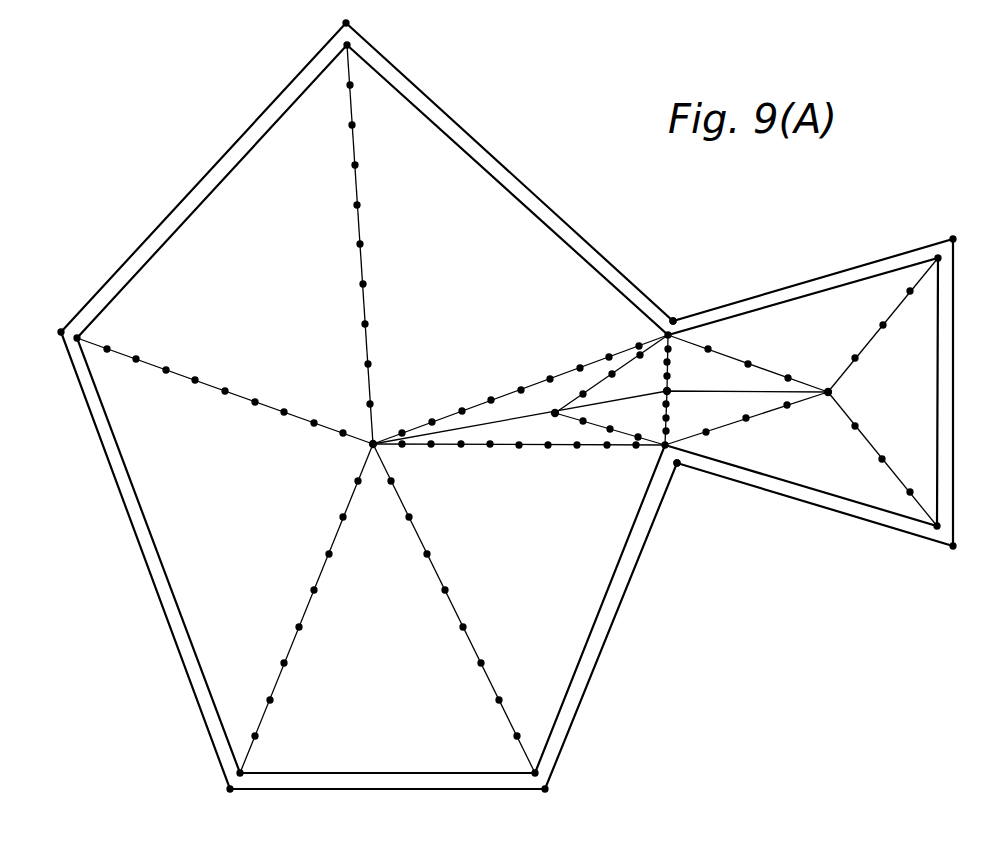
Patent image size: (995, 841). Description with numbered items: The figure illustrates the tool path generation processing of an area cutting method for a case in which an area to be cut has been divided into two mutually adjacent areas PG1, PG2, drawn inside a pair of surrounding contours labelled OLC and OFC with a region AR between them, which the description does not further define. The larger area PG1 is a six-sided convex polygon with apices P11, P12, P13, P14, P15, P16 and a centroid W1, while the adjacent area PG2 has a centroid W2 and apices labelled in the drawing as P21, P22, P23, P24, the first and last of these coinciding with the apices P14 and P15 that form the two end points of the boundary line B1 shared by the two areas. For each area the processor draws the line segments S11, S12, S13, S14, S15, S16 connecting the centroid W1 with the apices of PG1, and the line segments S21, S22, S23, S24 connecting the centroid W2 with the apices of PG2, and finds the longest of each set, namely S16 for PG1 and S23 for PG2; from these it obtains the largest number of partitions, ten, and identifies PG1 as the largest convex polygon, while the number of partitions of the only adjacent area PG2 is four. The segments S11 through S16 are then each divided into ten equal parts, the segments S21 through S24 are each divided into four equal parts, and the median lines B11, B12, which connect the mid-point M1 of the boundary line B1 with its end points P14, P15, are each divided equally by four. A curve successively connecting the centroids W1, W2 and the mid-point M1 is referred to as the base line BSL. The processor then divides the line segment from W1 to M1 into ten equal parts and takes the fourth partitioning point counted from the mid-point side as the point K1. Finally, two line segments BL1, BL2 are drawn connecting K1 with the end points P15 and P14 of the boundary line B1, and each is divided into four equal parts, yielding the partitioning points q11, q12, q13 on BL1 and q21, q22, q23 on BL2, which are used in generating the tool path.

The outer limit contour OLC is at (503, 159).
The offset contour OFC is at (523, 197).
The annular region between contours AR is at (541, 247).
The area PG1 is at (573, 638).
The area PG2 is at (883, 500).
The apex P11 is at (51, 335).
The apex P12 is at (214, 779).
The apex P13 is at (562, 778).
The apex P14 is at (683, 481).
The apex P15 is at (684, 309).
The apex P16 is at (367, 32).
The vertex P21 is at (683, 490).
The vertex P22 is at (958, 547).
The vertex P23 is at (961, 242).
The vertex P24 is at (684, 316).
The centroid W1 is at (388, 430).
The centroid W2 is at (848, 396).
The partitioning point K1 is at (545, 404).
The mid-point M1 is at (682, 394).
The line segment S11 is at (172, 375).
The line segment S12 is at (288, 652).
The line segment S13 is at (496, 693).
The line segment S14 is at (587, 447).
The line segment S15 is at (578, 368).
The line segment S16 is at (354, 142).
The line segment S21 is at (772, 410).
The line segment S22 is at (875, 450).
The line segment S23 is at (858, 353).
The line segment S24 is at (768, 371).
The base line BSL is at (757, 393).
The boundary line B1 is at (704, 433).
The median line B11 is at (672, 377).
The median line B12 is at (672, 400).
The line segment BL1 is at (611, 357).
The line segment BL2 is at (611, 462).
The partitioning point q11 is at (597, 396).
The partitioning point q12 is at (624, 378).
The partitioning point q13 is at (652, 363).
The partitioning point q21 is at (597, 418).
The partitioning point q22 is at (624, 421).
The partitioning point q23 is at (651, 427).